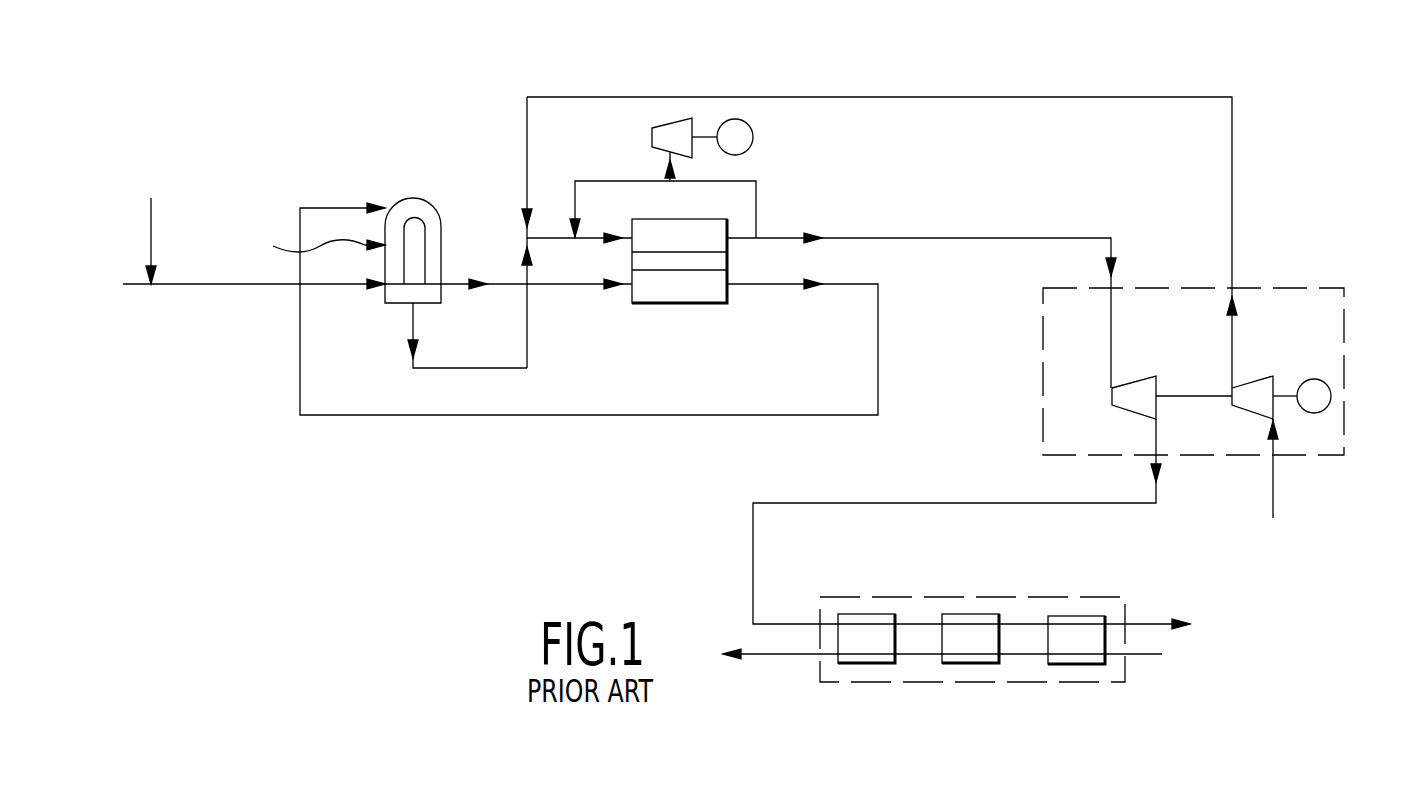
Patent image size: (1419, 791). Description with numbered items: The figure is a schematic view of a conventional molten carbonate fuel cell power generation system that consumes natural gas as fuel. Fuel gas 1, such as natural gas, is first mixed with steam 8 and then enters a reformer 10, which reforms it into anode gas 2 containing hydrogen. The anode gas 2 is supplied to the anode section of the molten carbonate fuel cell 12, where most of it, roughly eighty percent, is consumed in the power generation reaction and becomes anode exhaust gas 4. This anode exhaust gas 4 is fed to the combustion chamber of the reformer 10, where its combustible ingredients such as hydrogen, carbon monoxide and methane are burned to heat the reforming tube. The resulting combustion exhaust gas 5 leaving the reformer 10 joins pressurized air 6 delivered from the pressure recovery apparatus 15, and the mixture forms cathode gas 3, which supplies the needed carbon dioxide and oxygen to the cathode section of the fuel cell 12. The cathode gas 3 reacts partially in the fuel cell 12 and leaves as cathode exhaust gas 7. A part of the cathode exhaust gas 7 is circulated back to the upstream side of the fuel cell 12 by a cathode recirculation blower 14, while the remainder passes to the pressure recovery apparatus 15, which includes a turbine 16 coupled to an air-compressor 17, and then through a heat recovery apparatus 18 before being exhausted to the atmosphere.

The fuel gas 1 is at (133, 287).
The anode gas 2 is at (485, 275).
The cathode gas 3 is at (615, 233).
The anode exhaust gas 4 is at (342, 207).
The combustion exhaust gas 5 is at (413, 358).
The pressurized air 6 is at (527, 145).
The cathode exhaust gas 7 is at (808, 236).
The steam 8 is at (151, 218).
The reformer 10 is at (405, 196).
The molten carbonate fuel cell 12 is at (700, 305).
The cathode recirculation blower 14 is at (670, 132).
The pressure recovery apparatus 15 is at (1310, 270).
The turbine 16 is at (1127, 385).
The air-compressor 17 is at (1248, 385).
The heat recovery apparatus 18 is at (1060, 580).